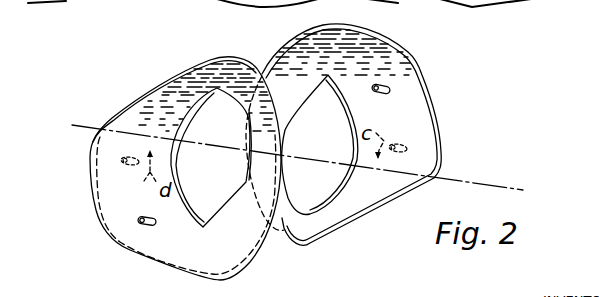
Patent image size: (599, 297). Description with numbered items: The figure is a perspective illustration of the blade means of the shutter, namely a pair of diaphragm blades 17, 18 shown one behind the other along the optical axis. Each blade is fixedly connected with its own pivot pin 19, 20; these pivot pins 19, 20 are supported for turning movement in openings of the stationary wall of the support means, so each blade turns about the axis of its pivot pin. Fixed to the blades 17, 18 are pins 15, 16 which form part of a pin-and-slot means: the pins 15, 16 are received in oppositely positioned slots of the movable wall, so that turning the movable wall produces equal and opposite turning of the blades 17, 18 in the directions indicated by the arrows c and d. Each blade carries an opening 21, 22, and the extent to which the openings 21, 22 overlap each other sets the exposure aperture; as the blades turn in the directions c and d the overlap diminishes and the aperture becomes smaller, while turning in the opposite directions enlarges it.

The pin 15 is at (380, 94).
The pin 16 is at (153, 226).
The diaphragm blade 17 is at (372, 42).
The diaphragm blade 18 is at (148, 107).
The pivot pin 19 is at (408, 147).
The pivot pin 20 is at (119, 157).
The opening 21 is at (297, 110).
The opening 22 is at (233, 197).